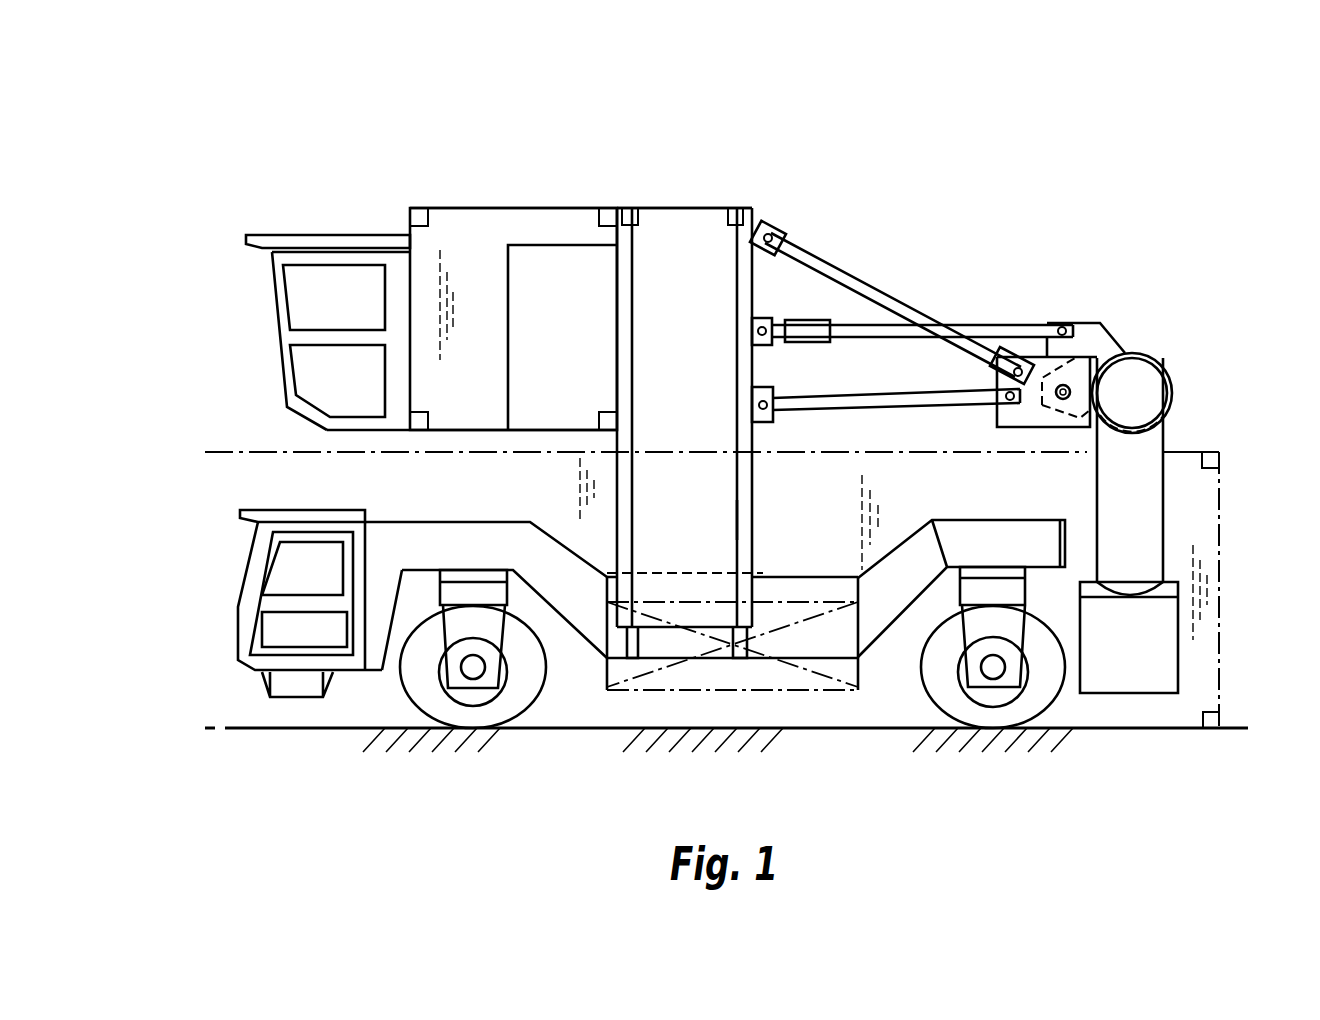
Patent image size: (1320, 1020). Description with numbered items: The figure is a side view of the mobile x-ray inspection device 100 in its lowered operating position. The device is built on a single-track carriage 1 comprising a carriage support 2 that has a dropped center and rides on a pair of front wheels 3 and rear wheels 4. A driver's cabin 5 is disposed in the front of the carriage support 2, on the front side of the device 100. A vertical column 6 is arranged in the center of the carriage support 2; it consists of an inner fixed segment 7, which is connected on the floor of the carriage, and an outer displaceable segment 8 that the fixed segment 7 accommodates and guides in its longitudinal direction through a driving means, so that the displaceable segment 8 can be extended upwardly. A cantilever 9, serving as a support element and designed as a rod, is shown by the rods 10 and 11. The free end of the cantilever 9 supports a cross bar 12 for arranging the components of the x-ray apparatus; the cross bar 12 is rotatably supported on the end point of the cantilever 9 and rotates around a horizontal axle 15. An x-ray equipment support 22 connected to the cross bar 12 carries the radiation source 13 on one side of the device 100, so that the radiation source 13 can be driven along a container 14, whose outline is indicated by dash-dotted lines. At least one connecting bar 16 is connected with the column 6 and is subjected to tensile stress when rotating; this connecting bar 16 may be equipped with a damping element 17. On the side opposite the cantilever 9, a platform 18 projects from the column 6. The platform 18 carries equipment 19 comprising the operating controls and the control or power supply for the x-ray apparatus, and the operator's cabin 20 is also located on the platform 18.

The device 100 is at (640, 152).
The single-track carriage 1 is at (572, 700).
The carriage support 2 is at (873, 623).
The front wheels 3 is at (438, 712).
The rear wheels 4 is at (1030, 710).
The driver's cabin 5 is at (288, 628).
The vertical column 6 is at (762, 520).
The inner fixed segment 7 is at (717, 540).
The outer displaceable segment 8 is at (752, 492).
The cantilever 9 is at (873, 273).
The rod 10 is at (917, 318).
The rod 11 is at (880, 402).
The cross bar 12 is at (1140, 382).
The radiation source 13 is at (1160, 655).
The container 14 is at (1180, 465).
The horizontal axle 15 is at (1065, 384).
The connecting bar 16 is at (1015, 328).
The damping element 17 is at (812, 320).
The platform 18 is at (463, 430).
The equipment 19 is at (487, 232).
The operator's cabin 20 is at (340, 280).
The x-ray equipment support 22 is at (1145, 525).